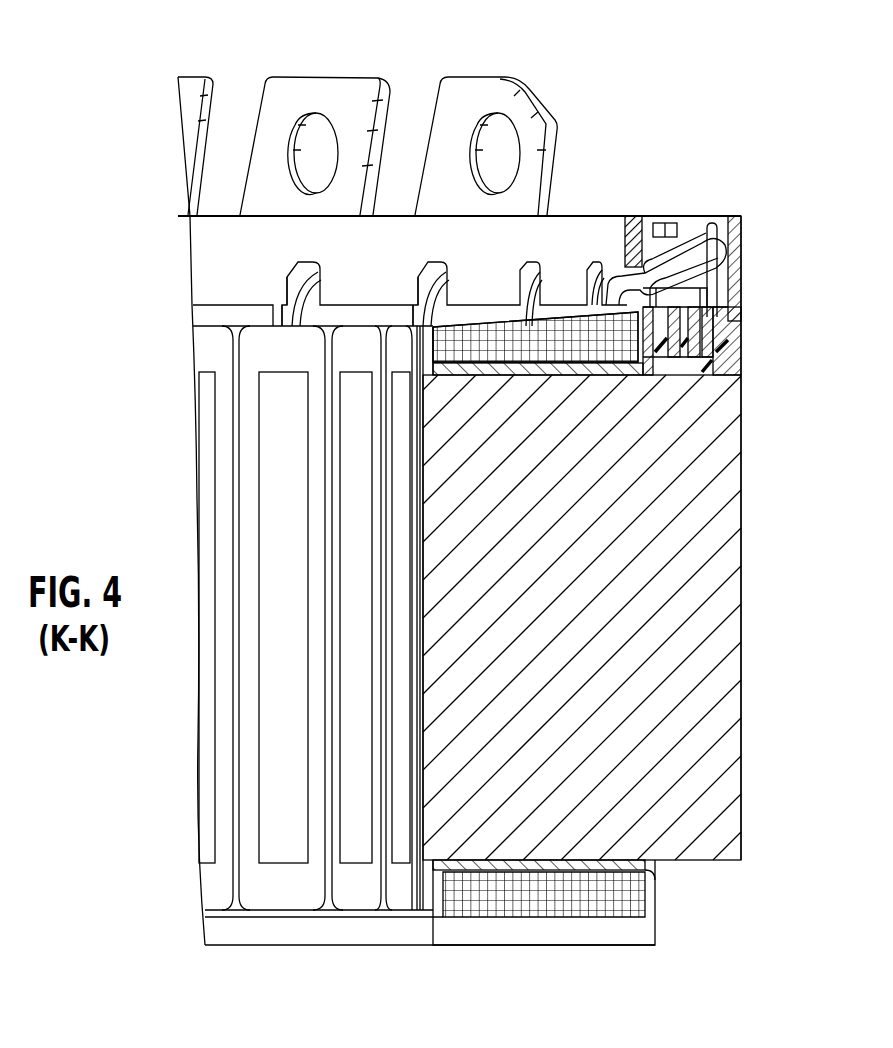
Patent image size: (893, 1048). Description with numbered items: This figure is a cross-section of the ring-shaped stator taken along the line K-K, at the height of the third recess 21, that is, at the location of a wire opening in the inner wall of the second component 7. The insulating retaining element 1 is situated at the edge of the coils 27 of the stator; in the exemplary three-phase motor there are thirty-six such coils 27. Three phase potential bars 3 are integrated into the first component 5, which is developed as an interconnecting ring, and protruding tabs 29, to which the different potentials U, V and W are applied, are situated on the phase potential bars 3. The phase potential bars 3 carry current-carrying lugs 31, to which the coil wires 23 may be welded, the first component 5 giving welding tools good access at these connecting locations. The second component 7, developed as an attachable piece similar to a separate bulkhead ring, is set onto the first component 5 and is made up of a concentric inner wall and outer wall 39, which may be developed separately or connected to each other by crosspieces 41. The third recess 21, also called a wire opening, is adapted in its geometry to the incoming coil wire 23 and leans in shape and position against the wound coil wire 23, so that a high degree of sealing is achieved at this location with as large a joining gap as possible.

The insulating retaining element 1 is at (753, 209).
The phase potential bars 3 is at (697, 354).
The first component 5 is at (720, 371).
The second component 7 is at (752, 270).
The third recess 21 is at (605, 270).
The coil wire 23 is at (687, 247).
The coils 27 is at (630, 266).
The protruding tabs 29 is at (455, 98).
The current-carrying lugs 31 is at (713, 228).
The outer wall 39 is at (744, 233).
The crosspieces 41 is at (651, 248).